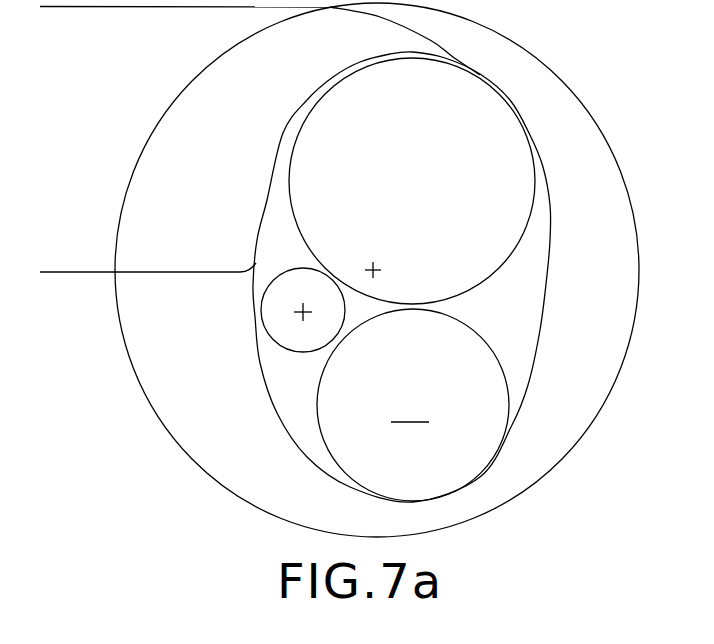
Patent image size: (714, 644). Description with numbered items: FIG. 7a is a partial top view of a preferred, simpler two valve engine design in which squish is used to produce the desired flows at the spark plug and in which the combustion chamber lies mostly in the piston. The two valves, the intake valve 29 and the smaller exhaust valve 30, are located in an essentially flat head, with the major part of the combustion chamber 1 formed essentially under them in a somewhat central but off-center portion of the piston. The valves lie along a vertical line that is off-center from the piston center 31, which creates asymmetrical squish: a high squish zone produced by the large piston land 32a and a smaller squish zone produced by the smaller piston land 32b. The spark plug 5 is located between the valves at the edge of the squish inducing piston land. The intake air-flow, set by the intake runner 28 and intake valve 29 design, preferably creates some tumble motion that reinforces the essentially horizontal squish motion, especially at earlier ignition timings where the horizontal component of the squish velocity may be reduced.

The combustion chamber 1 is at (522, 300).
The intake runner 28 is at (113, 124).
The intake valve 29 is at (424, 140).
The exhaust valve 30 is at (442, 360).
The piston center 31 is at (414, 271).
The large piston land 32a is at (211, 226).
The smaller piston land 32b is at (613, 272).
The spark plug 5 is at (293, 353).